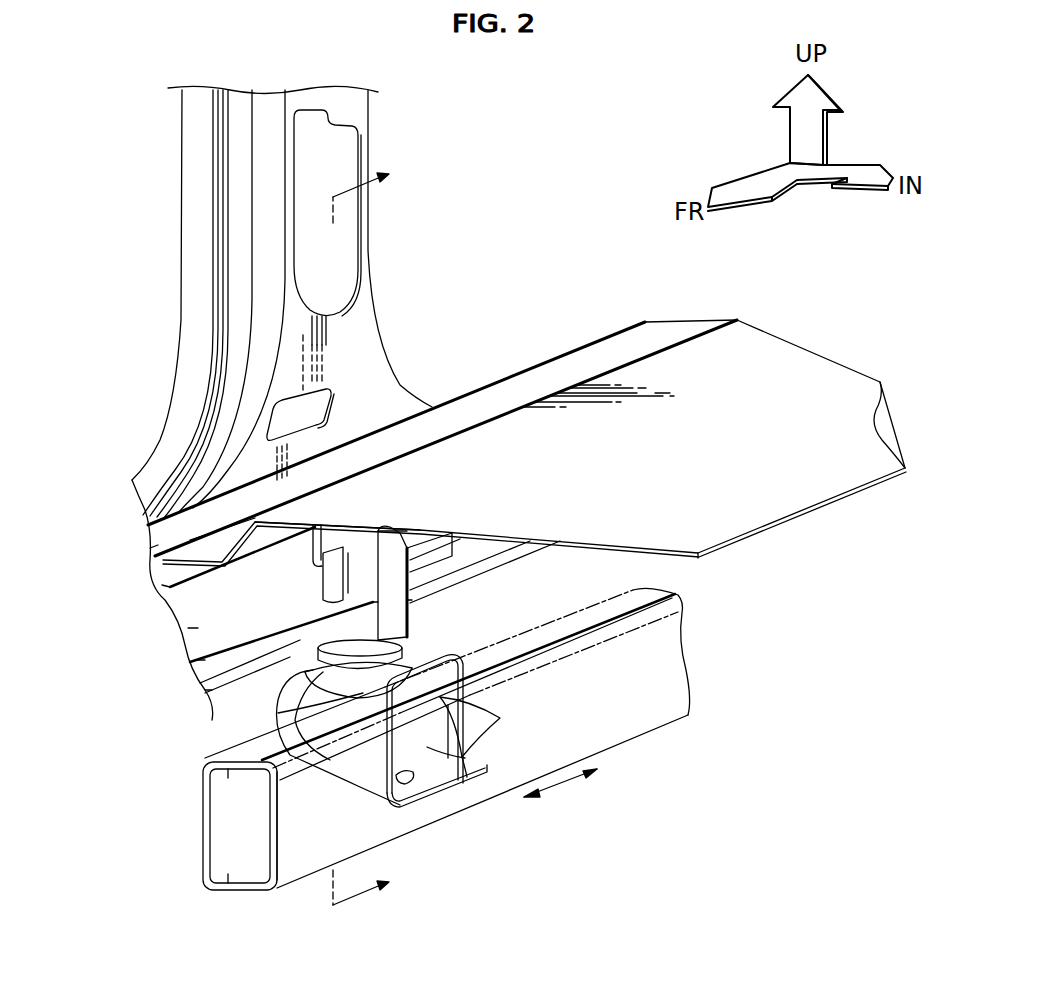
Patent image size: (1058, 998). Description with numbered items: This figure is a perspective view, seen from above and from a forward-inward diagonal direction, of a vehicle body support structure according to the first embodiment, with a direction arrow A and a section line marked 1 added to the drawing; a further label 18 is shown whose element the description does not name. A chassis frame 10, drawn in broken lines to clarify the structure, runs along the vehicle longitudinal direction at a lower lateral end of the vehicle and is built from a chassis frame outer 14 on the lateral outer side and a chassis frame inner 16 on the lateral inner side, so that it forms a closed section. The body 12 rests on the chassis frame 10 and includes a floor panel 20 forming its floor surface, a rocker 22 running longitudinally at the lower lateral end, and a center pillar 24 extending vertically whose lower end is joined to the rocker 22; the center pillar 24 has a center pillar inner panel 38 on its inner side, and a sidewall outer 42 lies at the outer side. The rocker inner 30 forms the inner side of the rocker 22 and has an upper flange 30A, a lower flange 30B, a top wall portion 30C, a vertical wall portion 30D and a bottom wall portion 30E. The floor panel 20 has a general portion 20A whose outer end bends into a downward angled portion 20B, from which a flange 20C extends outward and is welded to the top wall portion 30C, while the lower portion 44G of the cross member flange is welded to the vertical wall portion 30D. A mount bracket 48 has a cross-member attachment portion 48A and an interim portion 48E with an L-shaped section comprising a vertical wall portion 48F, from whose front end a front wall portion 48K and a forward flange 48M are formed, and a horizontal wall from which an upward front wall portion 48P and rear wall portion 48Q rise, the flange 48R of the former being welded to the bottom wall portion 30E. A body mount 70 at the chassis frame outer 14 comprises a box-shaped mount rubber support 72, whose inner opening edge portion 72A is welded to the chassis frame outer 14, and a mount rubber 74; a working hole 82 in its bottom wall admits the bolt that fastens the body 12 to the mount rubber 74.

The section line 1 is at (371, 532).
The chassis frame 10 is at (619, 748).
The body 12 is at (116, 427).
The chassis frame outer 14 is at (215, 822).
The chassis frame inner 16 is at (308, 850).
The vehicle cabin interior 18 is at (535, 275).
The floor panel 20 is at (690, 380).
The general portion 20A is at (755, 510).
The angled portion 20B is at (325, 527).
The flange 20C is at (208, 537).
The rocker 22 is at (503, 571).
The center pillar 24 is at (178, 214).
The rocker inner 30 is at (489, 555).
The upper flange 30A is at (150, 548).
The lower flange 30B is at (205, 690).
The top wall portion 30C is at (162, 585).
The vertical wall portion 30D is at (188, 628).
The bottom wall portion 30E is at (195, 660).
The center pillar inner panel 38 is at (372, 318).
The sidewall outer 42 is at (185, 290).
The lower portion 44G is at (315, 548).
The mount bracket 48 is at (410, 556).
The cross-member attachment portion 48A is at (394, 544).
The interim portion 48E is at (410, 614).
The vertical wall portion 48F is at (395, 632).
The front wall portion 48K is at (330, 580).
The flange 48M is at (340, 597).
The front wall portion 48P is at (340, 662).
The rear wall portion 48Q is at (412, 607).
The flange 48R is at (285, 630).
The body mount 70 is at (180, 708).
The mount rubber support 72 is at (268, 726).
The opening edge portion 72A is at (472, 718).
The mount rubber 74 is at (290, 702).
The working hole 82 is at (405, 778).
The direction A is at (560, 800).